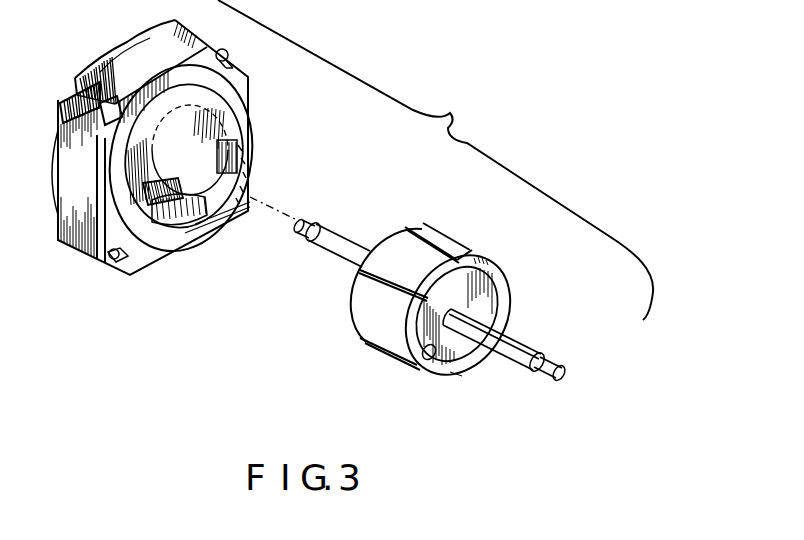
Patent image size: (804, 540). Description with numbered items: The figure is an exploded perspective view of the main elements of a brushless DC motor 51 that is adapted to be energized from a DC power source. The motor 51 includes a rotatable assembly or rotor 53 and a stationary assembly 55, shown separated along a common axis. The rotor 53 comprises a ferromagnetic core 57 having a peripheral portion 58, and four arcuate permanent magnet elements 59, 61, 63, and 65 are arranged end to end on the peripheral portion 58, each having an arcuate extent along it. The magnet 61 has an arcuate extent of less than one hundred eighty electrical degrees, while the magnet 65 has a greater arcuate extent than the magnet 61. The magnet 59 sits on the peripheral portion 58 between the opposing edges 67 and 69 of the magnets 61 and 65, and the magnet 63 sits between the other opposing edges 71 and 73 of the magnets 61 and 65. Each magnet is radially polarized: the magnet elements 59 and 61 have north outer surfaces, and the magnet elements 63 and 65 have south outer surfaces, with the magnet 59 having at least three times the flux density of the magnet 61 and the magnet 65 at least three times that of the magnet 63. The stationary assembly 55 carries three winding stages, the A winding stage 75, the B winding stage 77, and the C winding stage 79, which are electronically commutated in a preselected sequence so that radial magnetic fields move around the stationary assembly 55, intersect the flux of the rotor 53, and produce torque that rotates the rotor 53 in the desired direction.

The motor 51 is at (435, 160).
The rotor 53 is at (440, 308).
The stationary assembly 55 is at (179, 159).
The ferromagnetic core 57 is at (440, 372).
The peripheral portion 58 is at (428, 360).
The permanent magnet element 59 is at (393, 248).
The permanent magnet element 61 is at (372, 336).
The permanent magnet element 63 is at (480, 360).
The permanent magnet element 65 is at (468, 250).
The edge of magnet 61 67 is at (403, 223).
The edge of magnet 65 69 is at (363, 268).
The edge of magnet 61 71 is at (497, 277).
The edge of magnet 65 73 is at (457, 372).
The A winding stage 75 is at (183, 160).
The B winding stage 77 is at (215, 133).
The C winding stage 79 is at (165, 217).